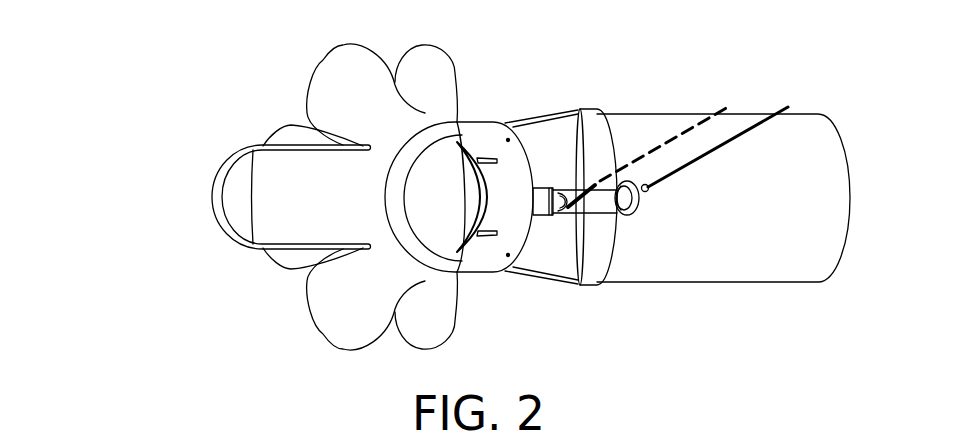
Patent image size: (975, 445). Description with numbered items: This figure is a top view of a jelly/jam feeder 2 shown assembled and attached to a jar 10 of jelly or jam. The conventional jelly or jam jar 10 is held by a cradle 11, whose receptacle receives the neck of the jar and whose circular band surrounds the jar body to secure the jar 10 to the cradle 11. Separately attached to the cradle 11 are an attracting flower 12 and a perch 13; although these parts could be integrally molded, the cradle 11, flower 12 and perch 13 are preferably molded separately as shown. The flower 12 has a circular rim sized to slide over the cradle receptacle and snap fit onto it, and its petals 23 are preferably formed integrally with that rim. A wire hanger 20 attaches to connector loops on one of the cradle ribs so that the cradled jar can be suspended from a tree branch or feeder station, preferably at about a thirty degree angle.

The jelly/jam feeder 2 is at (126, 86).
The jar 10 is at (731, 255).
The cradle 11 is at (600, 100).
The attracting flower 12 is at (345, 198).
The perch 13 is at (228, 163).
The wire hanger 20 is at (737, 142).
The petals 23 is at (335, 80).